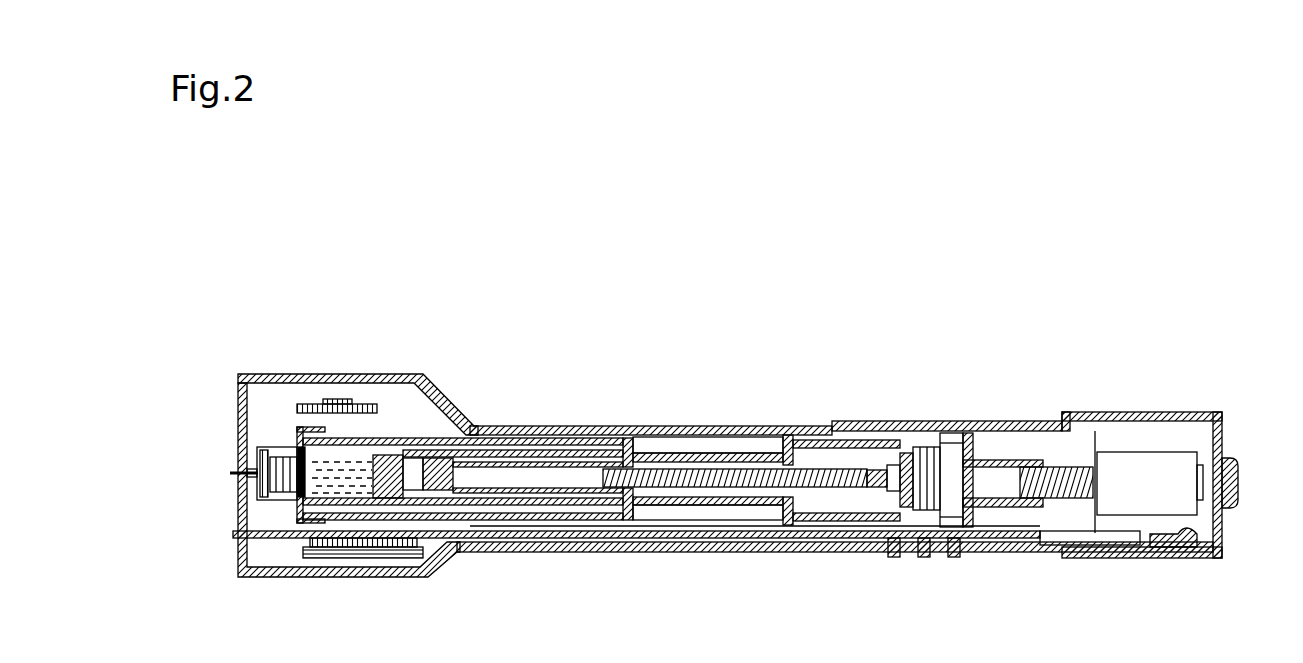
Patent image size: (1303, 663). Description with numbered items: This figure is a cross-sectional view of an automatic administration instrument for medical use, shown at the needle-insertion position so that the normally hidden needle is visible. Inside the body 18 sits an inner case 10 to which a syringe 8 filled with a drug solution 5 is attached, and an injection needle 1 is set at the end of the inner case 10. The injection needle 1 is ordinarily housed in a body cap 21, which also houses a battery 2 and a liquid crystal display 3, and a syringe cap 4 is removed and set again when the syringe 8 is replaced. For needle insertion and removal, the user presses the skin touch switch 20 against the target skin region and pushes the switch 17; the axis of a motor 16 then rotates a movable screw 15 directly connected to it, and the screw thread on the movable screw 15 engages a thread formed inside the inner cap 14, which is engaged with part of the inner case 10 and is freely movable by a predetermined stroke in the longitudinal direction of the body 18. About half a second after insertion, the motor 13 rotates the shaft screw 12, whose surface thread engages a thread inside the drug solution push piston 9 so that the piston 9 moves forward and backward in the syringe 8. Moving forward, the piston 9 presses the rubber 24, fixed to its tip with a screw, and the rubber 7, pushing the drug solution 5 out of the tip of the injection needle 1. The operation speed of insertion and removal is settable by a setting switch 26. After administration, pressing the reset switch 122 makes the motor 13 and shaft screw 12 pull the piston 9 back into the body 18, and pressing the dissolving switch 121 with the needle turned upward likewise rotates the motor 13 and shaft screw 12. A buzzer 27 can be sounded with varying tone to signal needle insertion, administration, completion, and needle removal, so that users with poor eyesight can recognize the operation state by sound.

The injection needle 1 is at (217, 472).
The battery 2 is at (307, 404).
The liquid crystal display 3 is at (298, 560).
The syringe cap 4 is at (265, 378).
The drug solution 5 is at (330, 473).
The rubber 7 is at (399, 455).
The syringe 8 is at (513, 506).
The drug solution push piston 9 is at (558, 494).
The inner case 10 is at (770, 505).
The shaft screw 12 is at (808, 469).
The motor 13 is at (906, 452).
The inner cap 14 is at (992, 460).
The movable screw 15 is at (1050, 466).
The motor 16 is at (1155, 455).
The switch 17 is at (1236, 457).
The body 18 is at (822, 553).
The skin touch switch 20 is at (233, 538).
The body cap 21 is at (297, 428).
The rubber 24 is at (428, 458).
The setting switch 26 is at (893, 558).
The buzzer 27 is at (1212, 537).
The dissolving switch 121 is at (923, 558).
The reset switch 122 is at (953, 558).